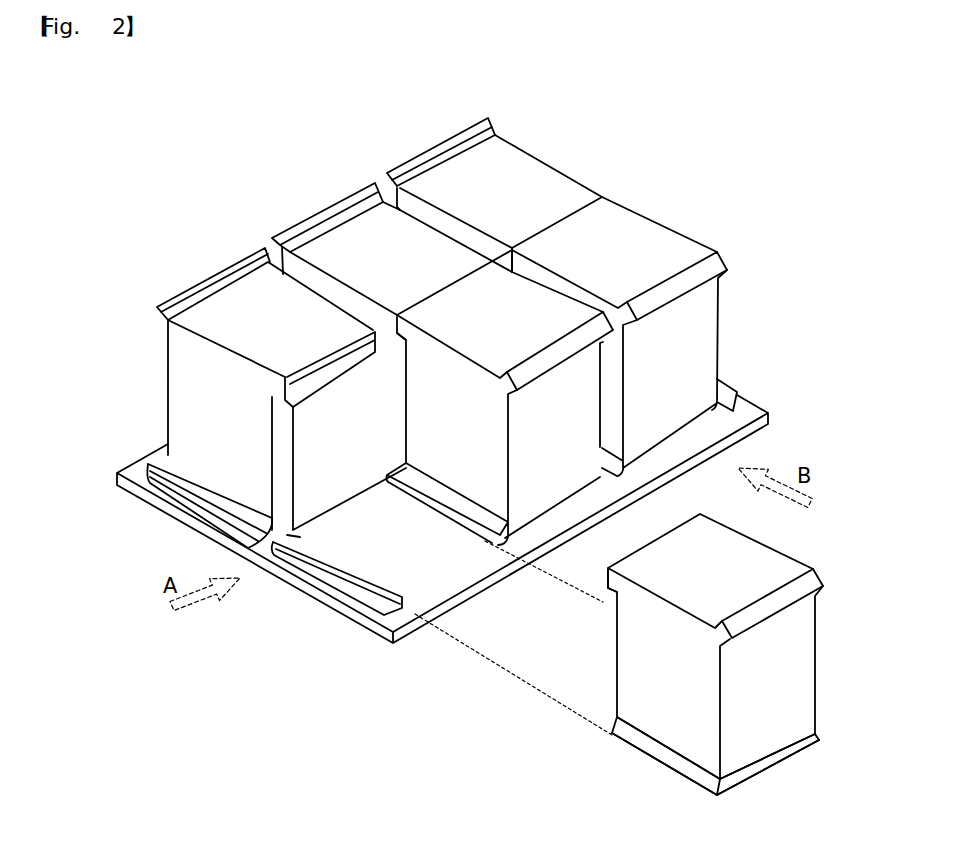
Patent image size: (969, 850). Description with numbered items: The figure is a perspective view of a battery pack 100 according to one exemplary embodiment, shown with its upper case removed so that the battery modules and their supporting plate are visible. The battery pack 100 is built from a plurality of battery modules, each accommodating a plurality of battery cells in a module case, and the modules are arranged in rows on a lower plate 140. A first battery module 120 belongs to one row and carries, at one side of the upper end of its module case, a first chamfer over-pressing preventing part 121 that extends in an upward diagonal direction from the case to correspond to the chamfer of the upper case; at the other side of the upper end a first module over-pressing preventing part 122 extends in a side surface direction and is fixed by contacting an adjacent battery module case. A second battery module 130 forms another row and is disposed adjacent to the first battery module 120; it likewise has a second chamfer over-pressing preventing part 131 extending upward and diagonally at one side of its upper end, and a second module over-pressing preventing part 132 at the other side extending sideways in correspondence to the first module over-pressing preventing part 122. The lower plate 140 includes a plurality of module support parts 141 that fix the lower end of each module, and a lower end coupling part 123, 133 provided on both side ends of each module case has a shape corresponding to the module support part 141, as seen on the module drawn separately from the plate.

The battery pack 100 is at (239, 143).
The first battery module 120 is at (532, 165).
The first chamfer over-pressing preventing part 121 is at (417, 156).
The first module over-pressing preventing part 122 is at (282, 390).
The lower end coupling part 123 is at (688, 743).
The second battery module 130 is at (640, 223).
The second chamfer over-pressing preventing part 131 is at (722, 255).
The second module over-pressing preventing part 132 is at (612, 585).
The lower end coupling part 133 is at (709, 770).
The lower plate 140 is at (420, 598).
The module support part 141 is at (733, 383).